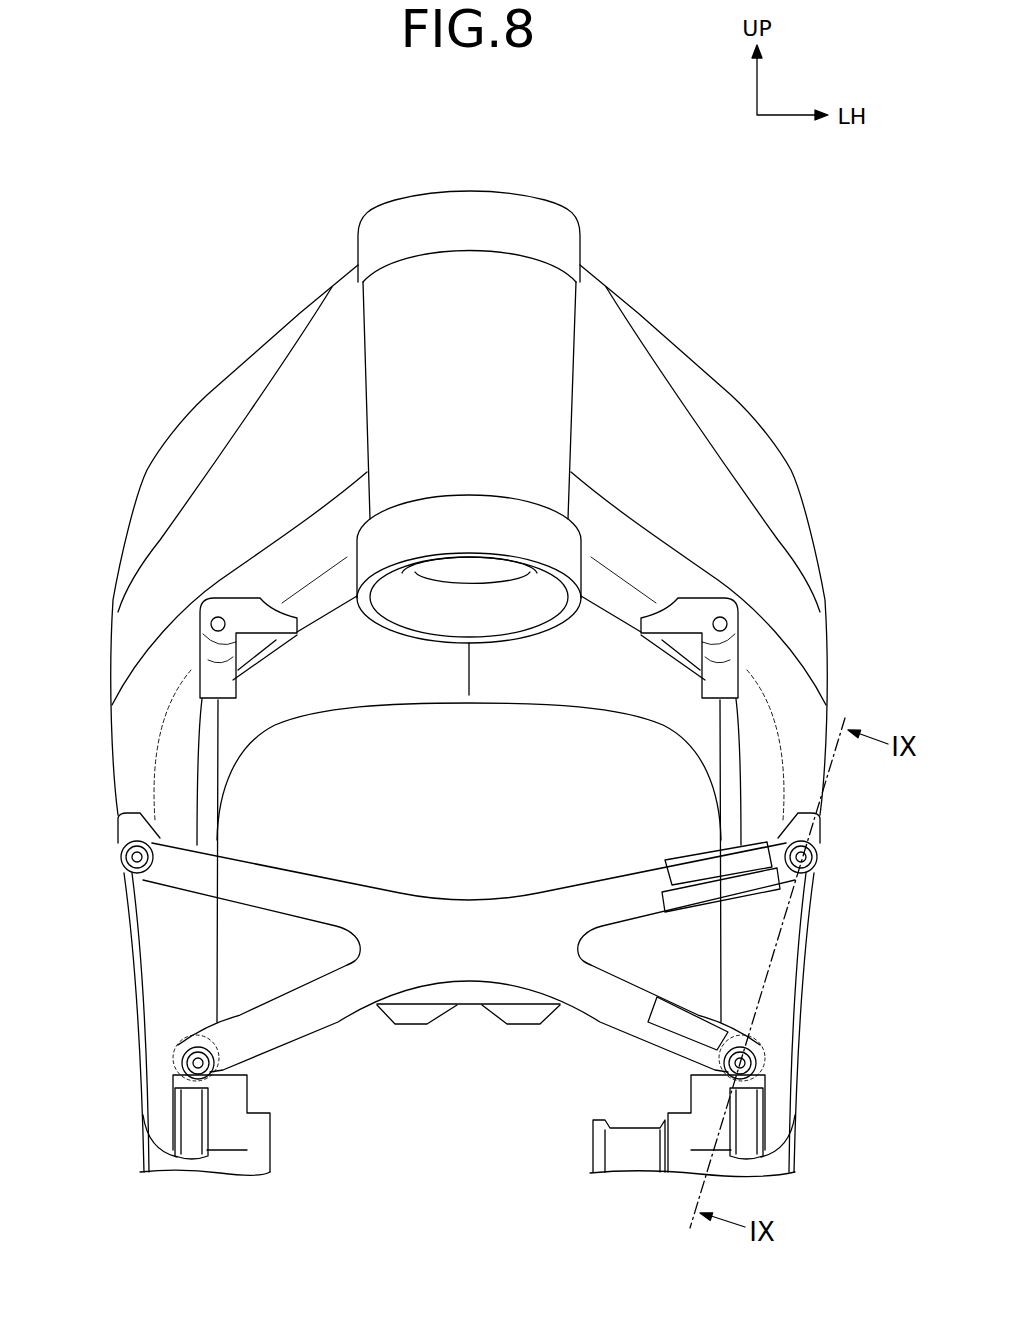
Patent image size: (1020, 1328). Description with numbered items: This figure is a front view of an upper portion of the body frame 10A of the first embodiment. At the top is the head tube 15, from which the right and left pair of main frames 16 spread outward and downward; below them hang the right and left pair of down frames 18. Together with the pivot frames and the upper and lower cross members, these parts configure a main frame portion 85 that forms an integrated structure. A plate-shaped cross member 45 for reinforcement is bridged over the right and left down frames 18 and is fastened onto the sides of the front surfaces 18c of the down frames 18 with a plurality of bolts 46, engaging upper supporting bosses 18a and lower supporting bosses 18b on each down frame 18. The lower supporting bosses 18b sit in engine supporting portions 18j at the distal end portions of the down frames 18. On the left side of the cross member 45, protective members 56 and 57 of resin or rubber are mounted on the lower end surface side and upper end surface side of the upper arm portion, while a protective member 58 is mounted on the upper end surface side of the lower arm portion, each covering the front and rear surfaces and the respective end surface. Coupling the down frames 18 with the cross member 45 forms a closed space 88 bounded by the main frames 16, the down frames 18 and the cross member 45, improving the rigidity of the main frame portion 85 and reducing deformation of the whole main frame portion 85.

The body frame 10A is at (196, 332).
The head tube 15 is at (458, 222).
The main frames 16 is at (208, 400).
The main frame portion 85 is at (667, 332).
The closed space 88 is at (627, 778).
The down frames 18 is at (142, 945).
The upper supporting bosses 18a is at (130, 840).
The lower supporting bosses 18b is at (185, 1045).
The front surfaces 18c is at (170, 912).
The engine supporting portions 18j is at (158, 1128).
The bolts 46 is at (122, 860).
The cross member 45 is at (470, 982).
The protective member 56 is at (778, 893).
The protective member 57 is at (752, 850).
The protective member 58 is at (740, 1005).